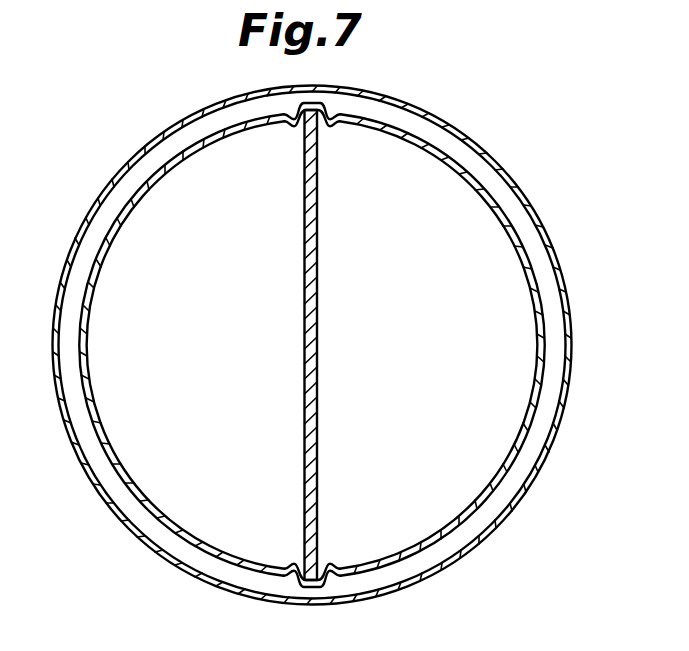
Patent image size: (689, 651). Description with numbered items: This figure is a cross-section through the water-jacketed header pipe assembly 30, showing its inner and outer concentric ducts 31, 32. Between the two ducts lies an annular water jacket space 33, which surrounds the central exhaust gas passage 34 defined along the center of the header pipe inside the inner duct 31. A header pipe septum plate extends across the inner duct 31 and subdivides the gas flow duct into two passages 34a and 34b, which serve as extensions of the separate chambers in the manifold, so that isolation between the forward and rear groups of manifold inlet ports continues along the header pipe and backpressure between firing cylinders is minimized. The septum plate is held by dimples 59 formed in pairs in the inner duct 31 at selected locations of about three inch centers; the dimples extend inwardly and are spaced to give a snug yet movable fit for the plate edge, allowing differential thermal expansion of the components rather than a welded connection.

The header pipe assembly 30 is at (106, 164).
The inner duct 31 is at (535, 312).
The outer duct 32 is at (565, 416).
The annular water jacket space 33 is at (559, 356).
The central exhaust gas passage 34 is at (240, 228).
The passage 34a is at (232, 366).
The passage 34b is at (440, 355).
The dimples 59 is at (293, 127).